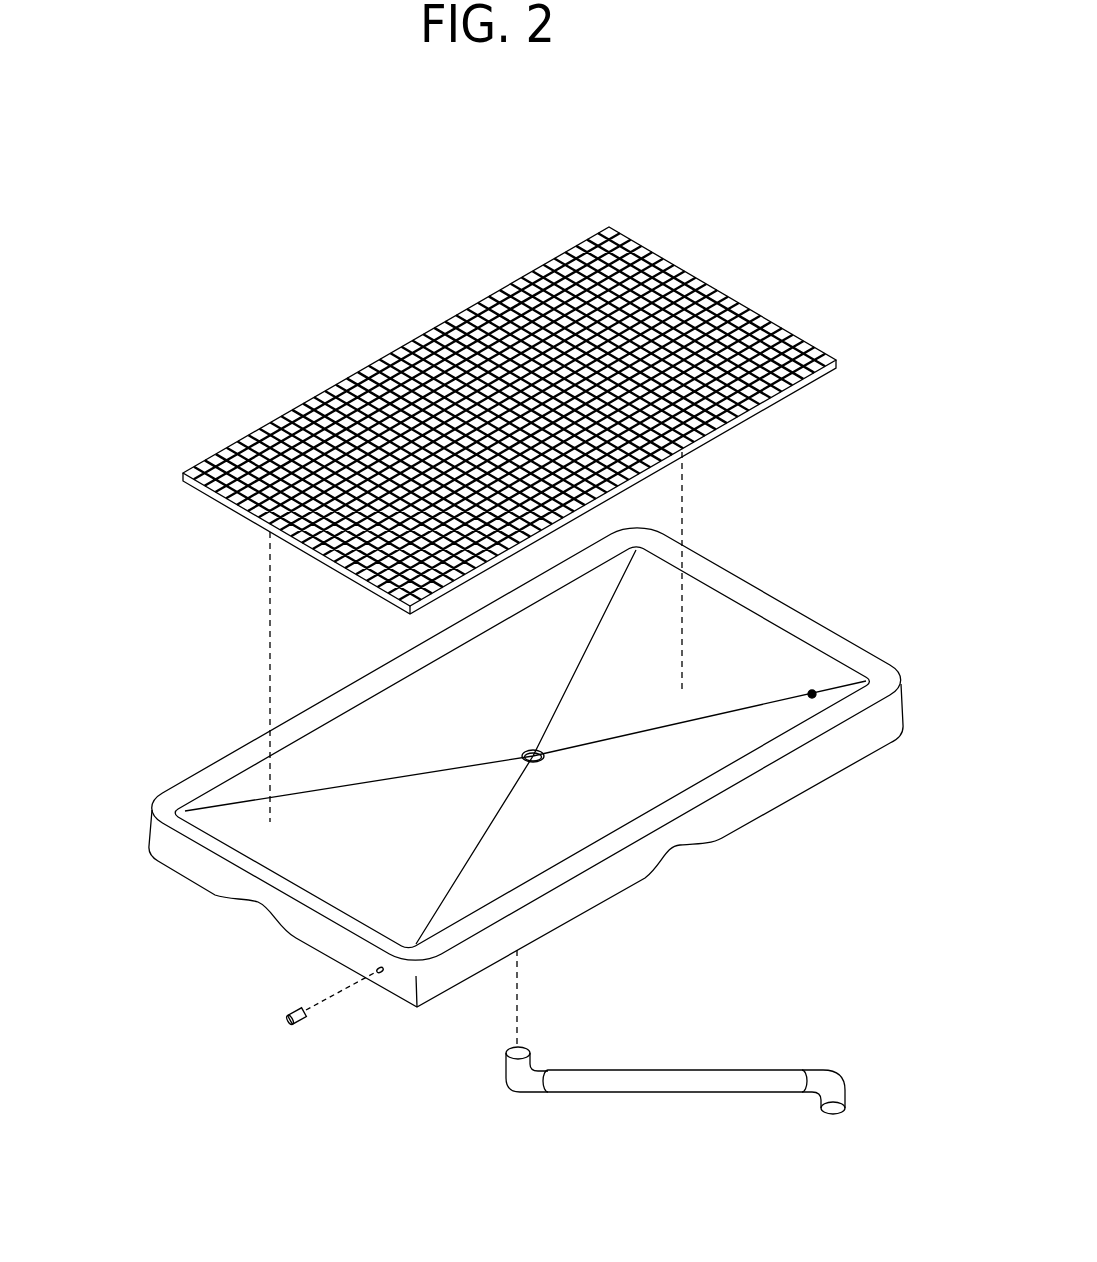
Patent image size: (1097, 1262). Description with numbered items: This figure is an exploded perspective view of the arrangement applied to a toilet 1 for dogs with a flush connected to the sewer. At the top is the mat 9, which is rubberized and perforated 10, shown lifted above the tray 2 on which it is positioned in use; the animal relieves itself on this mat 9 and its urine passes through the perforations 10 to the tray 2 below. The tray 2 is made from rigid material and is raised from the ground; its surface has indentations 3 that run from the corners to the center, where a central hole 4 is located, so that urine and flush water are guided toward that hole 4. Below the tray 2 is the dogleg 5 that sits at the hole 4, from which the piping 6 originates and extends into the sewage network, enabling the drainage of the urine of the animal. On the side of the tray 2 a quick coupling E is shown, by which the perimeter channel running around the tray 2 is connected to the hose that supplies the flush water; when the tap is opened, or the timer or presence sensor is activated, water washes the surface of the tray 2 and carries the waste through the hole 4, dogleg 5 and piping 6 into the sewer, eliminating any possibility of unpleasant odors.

The toilet 1 is at (868, 108).
The tray 2 is at (185, 853).
The indentations 3 is at (813, 693).
The central hole 4 is at (545, 758).
The dogleg 5 is at (508, 1083).
The piping 6 is at (703, 1080).
The mat 9 is at (222, 504).
The perforations 10 is at (242, 441).
The quick coupling E is at (288, 1022).